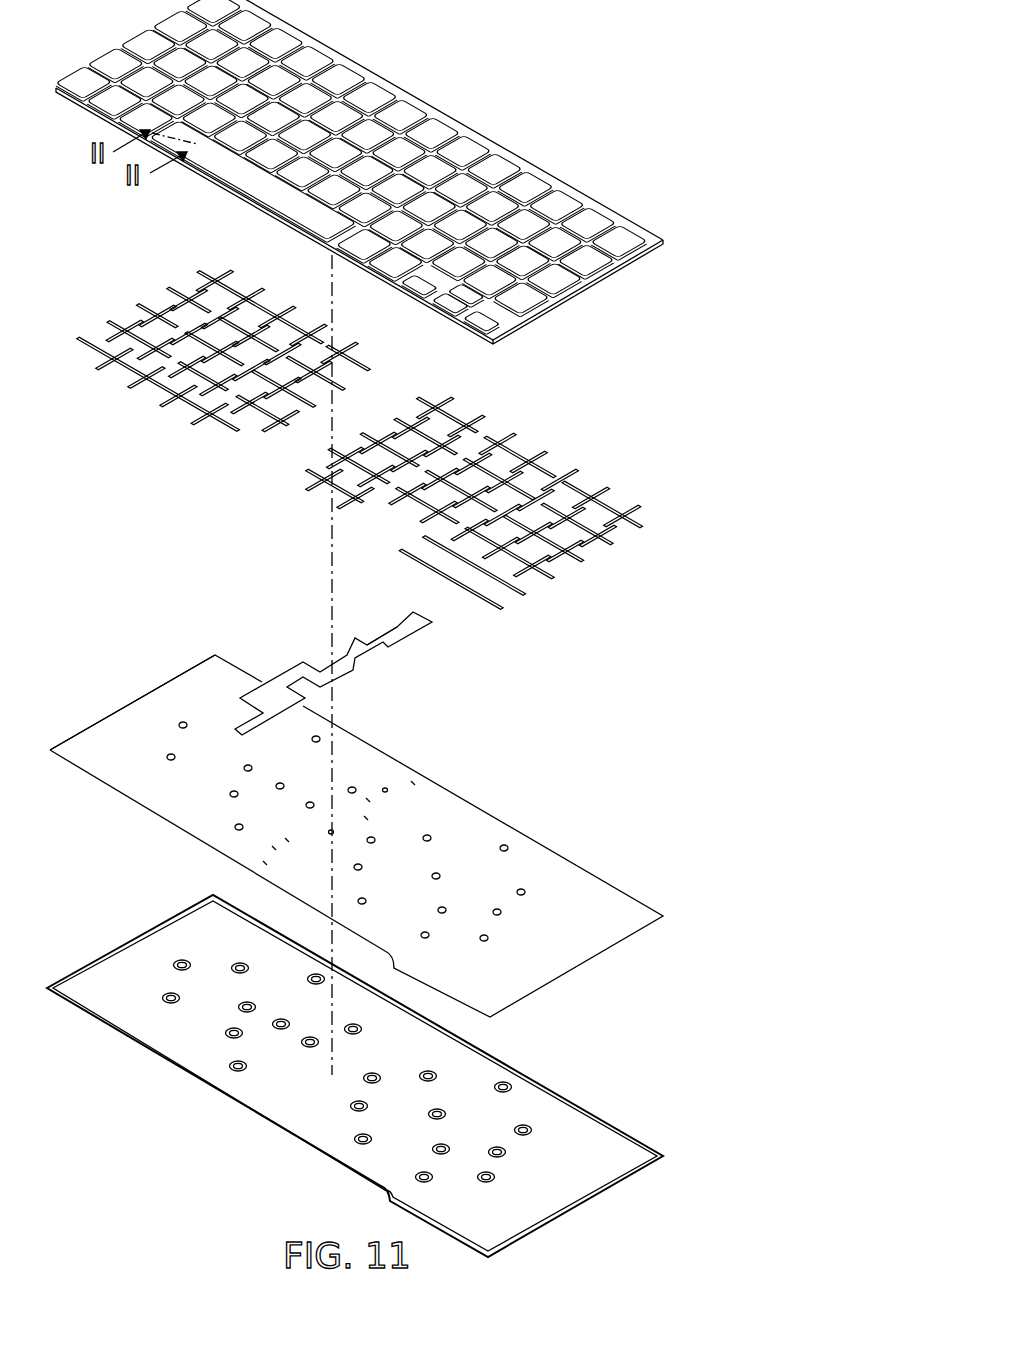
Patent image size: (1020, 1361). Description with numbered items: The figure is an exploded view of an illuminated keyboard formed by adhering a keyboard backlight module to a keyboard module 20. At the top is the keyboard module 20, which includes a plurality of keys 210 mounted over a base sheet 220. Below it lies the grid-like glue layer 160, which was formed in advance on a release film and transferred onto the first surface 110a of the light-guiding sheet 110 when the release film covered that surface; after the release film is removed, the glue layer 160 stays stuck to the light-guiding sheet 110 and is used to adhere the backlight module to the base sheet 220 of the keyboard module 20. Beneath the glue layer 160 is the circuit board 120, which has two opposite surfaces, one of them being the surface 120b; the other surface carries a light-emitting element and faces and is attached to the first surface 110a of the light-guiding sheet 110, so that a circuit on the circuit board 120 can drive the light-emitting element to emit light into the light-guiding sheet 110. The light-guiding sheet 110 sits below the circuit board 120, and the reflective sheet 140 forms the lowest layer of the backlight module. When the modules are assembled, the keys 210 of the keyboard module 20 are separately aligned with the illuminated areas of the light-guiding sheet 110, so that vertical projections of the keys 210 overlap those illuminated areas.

The keyboard module 20 is at (373, 193).
The keys 210 is at (566, 282).
The base sheet 220 is at (522, 318).
The glue layer 160 is at (596, 548).
The circuit board 120 is at (333, 653).
The surface of the circuit board 120b is at (380, 624).
The light-guiding sheet 110 is at (356, 839).
The first surface of the light-guiding sheet 110a is at (122, 712).
The reflective sheet 140 is at (591, 1126).